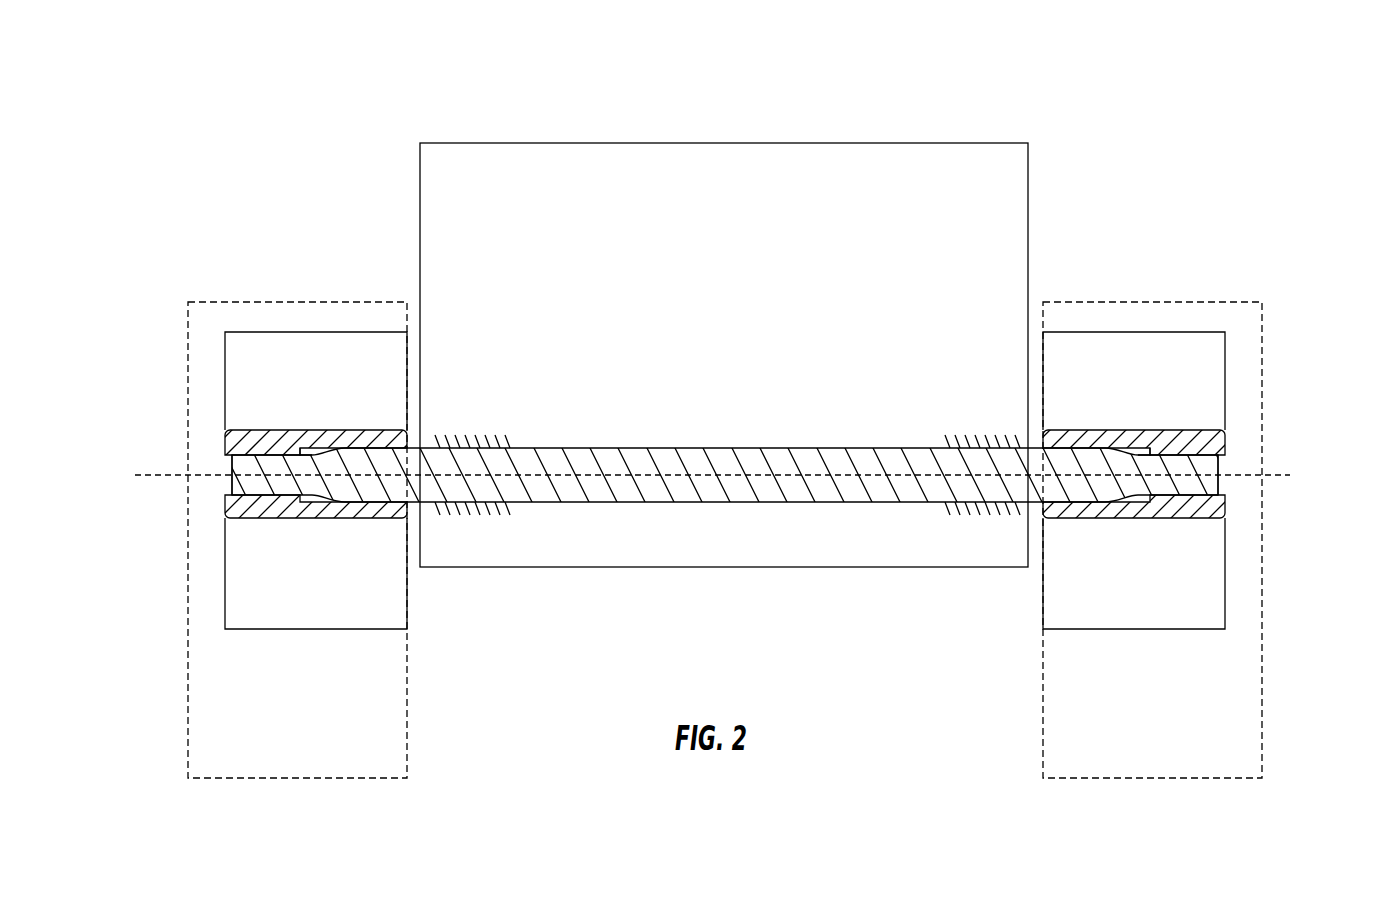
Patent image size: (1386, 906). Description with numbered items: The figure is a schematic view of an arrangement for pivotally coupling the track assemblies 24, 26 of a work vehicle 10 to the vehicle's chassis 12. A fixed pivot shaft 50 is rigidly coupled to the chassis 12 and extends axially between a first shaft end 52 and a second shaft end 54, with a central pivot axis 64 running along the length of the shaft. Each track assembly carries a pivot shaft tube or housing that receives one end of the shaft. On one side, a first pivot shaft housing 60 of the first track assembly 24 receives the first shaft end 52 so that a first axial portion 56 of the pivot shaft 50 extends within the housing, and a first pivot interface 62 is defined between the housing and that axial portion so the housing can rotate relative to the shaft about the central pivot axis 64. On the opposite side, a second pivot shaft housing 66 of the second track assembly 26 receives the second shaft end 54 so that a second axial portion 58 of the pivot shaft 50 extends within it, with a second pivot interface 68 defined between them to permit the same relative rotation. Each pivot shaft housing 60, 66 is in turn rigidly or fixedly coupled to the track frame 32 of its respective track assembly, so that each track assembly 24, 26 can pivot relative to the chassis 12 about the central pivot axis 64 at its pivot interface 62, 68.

The work vehicle 10 is at (1108, 94).
The chassis 12 is at (735, 258).
The first track assembly 24 is at (196, 296).
The second track assembly 26 is at (1254, 296).
The track frame 32 is at (240, 597).
The fixed pivot shaft 50 is at (774, 446).
The first shaft end 52 is at (230, 467).
The second shaft end 54 is at (1222, 466).
The first axial portion 56 is at (322, 466).
The second axial portion 58 is at (1140, 468).
The first pivot shaft housing 60 is at (262, 444).
The first pivot interface 62 is at (312, 450).
The central pivot axis 64 is at (620, 478).
The second pivot shaft housing 66 is at (1195, 440).
The second pivot interface 68 is at (1143, 450).